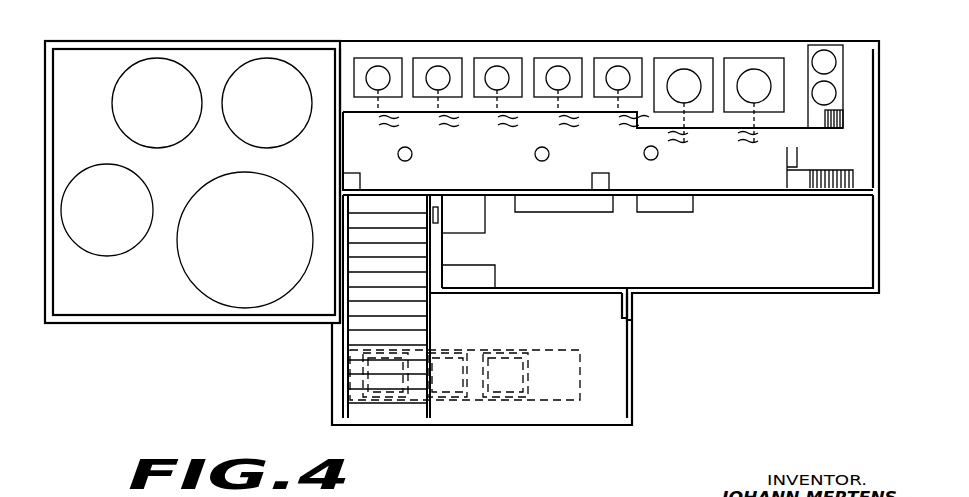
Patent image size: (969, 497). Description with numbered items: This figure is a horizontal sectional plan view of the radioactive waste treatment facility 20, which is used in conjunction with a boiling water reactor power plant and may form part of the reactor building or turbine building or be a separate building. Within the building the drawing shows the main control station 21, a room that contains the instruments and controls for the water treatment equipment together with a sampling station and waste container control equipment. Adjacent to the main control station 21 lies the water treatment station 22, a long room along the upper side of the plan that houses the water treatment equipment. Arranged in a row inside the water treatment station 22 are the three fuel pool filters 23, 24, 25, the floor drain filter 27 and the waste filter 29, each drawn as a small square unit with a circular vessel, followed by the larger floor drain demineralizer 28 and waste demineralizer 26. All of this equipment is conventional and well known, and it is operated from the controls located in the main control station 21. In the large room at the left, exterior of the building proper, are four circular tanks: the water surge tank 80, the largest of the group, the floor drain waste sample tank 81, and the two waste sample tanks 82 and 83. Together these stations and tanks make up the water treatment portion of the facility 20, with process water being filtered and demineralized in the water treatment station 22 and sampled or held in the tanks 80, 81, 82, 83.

The radioactive waste treatment facility 20 is at (888, 106).
The main control station 21 is at (799, 257).
The water treatment station 22 is at (350, 53).
The fuel pool filter 23 is at (378, 67).
The fuel pool filter 24 is at (436, 67).
The fuel pool filter 25 is at (496, 67).
The waste demineralizer 26 is at (753, 70).
The floor drain filter 27 is at (558, 67).
The floor drain demineralizer 28 is at (683, 70).
The waste filter 29 is at (618, 67).
The water surge tank 80 is at (262, 238).
The floor drain waste sample tank 81 is at (120, 222).
The waste sample tank 82 is at (280, 115).
The waste sample tank 83 is at (170, 115).